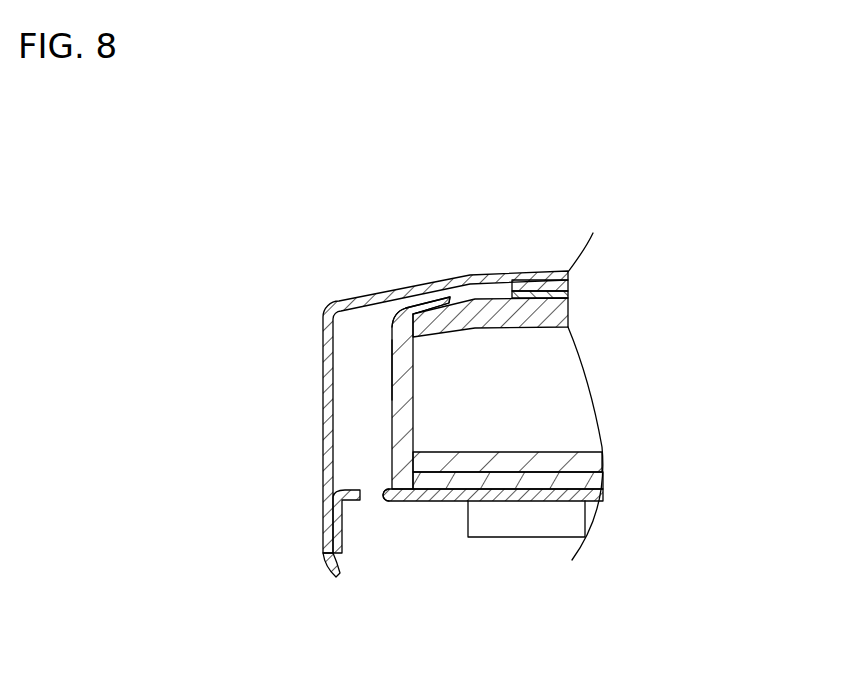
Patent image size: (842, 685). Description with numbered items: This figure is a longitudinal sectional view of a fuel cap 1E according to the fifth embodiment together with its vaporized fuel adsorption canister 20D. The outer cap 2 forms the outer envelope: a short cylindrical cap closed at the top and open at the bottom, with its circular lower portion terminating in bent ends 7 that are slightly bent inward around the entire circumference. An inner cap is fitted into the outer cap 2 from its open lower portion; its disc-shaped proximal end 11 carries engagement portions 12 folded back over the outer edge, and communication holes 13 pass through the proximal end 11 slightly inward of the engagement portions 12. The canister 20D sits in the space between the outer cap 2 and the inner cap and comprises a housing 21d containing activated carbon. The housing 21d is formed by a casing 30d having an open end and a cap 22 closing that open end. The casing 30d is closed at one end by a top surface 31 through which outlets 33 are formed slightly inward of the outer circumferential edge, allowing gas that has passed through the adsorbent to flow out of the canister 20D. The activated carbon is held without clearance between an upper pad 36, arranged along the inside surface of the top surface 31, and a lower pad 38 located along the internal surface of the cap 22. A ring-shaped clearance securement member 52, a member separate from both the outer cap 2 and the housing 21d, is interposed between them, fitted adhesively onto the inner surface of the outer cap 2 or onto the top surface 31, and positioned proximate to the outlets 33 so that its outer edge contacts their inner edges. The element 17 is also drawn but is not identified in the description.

The fuel cap 1E is at (421, 166).
The outer cap 2 is at (322, 423).
The bent ends 7 is at (330, 577).
The proximal end 11 is at (442, 502).
The engagement portions 12 is at (342, 536).
The communication holes 13 is at (380, 498).
The component 17 is at (560, 522).
The vaporized fuel adsorption canister 20D is at (390, 401).
The housing 21d is at (387, 362).
The cap 22 is at (528, 480).
The casing 30d is at (390, 327).
The top surface 31 is at (557, 297).
The outlets 33 is at (456, 297).
The pad 36 is at (540, 327).
The pad 38 is at (518, 458).
The clearance securement member 52 is at (531, 282).